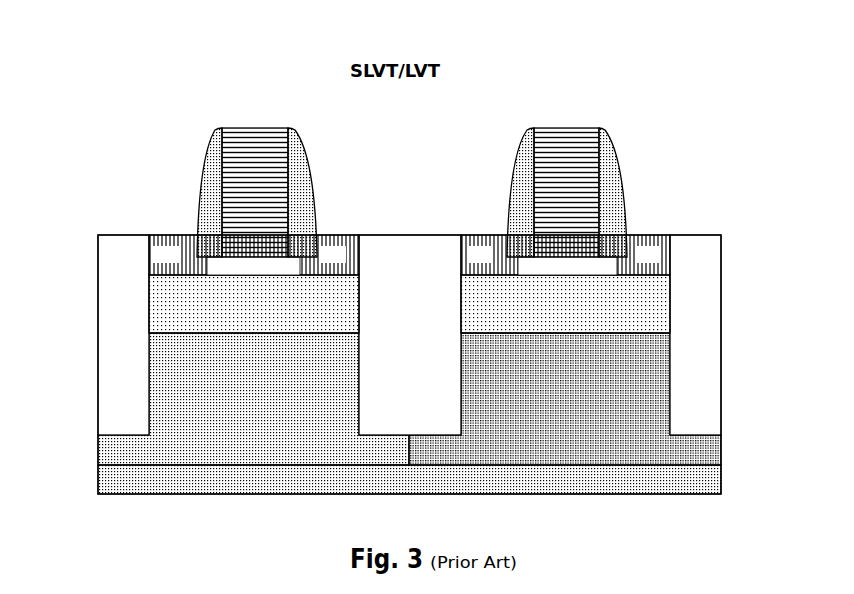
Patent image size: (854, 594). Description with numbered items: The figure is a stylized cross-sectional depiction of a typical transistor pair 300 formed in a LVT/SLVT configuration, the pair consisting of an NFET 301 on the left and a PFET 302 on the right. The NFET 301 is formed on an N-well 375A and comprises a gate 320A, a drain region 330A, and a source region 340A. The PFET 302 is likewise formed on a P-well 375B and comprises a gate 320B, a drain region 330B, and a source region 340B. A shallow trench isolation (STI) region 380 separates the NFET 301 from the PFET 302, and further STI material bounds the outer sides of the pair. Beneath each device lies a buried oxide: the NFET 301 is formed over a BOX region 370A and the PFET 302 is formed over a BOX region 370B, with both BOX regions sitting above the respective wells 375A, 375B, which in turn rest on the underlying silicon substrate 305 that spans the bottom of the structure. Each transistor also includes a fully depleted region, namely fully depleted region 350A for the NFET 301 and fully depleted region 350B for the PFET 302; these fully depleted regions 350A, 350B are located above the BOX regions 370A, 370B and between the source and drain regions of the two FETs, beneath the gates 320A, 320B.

The transistor pair 300 is at (86, 74).
The NFET 301 is at (188, 179).
The PFET 302 is at (564, 179).
The silicon substrate 305 is at (100, 481).
The gate 320A is at (263, 137).
The gate 320B is at (577, 137).
The drain region 330A is at (337, 232).
The drain region 330B is at (650, 232).
The source region 340A is at (242, 268).
The source region 340B is at (560, 267).
The fully depleted region 350A is at (203, 253).
The fully depleted region 350B is at (509, 255).
The BOX region 370A is at (165, 298).
The BOX region 370B is at (502, 305).
The N-well 375A is at (100, 455).
The P-well 375B is at (715, 448).
The shallow trench isolation (STI) region 380 is at (110, 363).